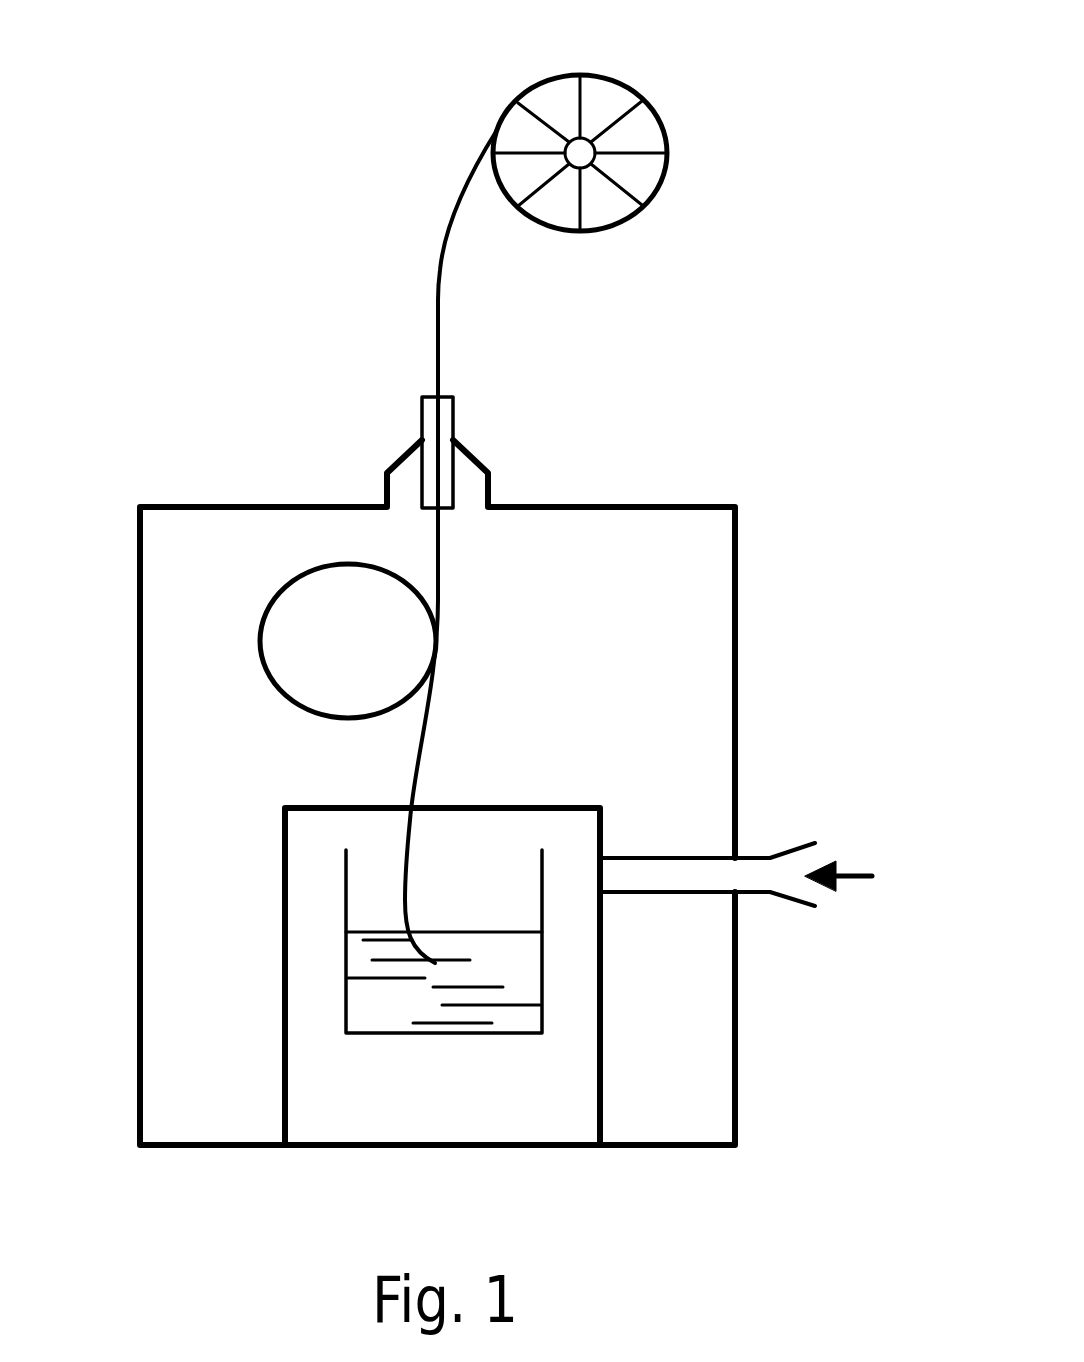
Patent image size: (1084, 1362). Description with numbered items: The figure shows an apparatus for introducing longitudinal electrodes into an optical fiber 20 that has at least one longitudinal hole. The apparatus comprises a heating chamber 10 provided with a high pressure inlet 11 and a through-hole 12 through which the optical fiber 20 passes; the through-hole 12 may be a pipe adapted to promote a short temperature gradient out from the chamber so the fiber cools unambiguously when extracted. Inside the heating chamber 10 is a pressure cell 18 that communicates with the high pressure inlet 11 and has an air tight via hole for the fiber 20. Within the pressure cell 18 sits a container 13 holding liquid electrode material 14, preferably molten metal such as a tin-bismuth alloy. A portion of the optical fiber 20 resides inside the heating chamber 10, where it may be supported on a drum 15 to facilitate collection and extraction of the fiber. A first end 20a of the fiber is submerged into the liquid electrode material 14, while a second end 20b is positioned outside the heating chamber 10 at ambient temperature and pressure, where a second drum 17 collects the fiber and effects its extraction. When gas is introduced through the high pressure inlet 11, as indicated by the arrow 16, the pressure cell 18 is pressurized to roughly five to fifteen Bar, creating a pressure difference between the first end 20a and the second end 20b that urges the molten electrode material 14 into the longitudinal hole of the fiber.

The heating chamber 10 is at (563, 505).
The high pressure inlet 11 is at (748, 858).
The through-hole 12 is at (445, 437).
The container 13 is at (545, 905).
The liquid electrode material 14 is at (383, 1000).
The drum 15 is at (320, 669).
The arrow 16 is at (840, 895).
The second drum 17 is at (545, 78).
The pressure cell 18 is at (465, 806).
The optical fiber 20 is at (442, 546).
The first end 20a is at (435, 963).
The second end 20b is at (440, 272).